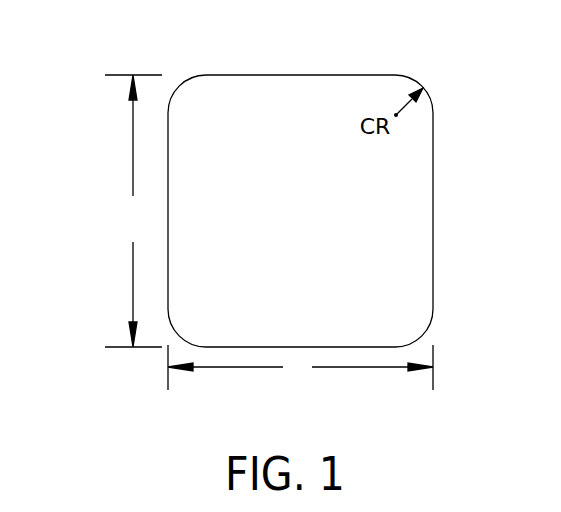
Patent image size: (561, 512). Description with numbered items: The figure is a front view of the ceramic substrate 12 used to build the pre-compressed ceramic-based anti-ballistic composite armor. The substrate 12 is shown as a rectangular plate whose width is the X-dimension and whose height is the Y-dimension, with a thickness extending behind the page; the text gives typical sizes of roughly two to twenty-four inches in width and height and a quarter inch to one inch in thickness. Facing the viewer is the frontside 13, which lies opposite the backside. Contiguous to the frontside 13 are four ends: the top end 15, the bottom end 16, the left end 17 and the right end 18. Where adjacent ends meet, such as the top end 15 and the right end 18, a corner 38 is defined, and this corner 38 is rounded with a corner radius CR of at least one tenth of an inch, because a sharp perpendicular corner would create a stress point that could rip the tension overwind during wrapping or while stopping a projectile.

The substrate 12 is at (107, 157).
The frontside 13 is at (250, 133).
The top end 15 is at (292, 75).
The bottom end 16 is at (355, 347).
The left end 17 is at (168, 265).
The right end 18 is at (433, 253).
The corner 38 is at (423, 87).